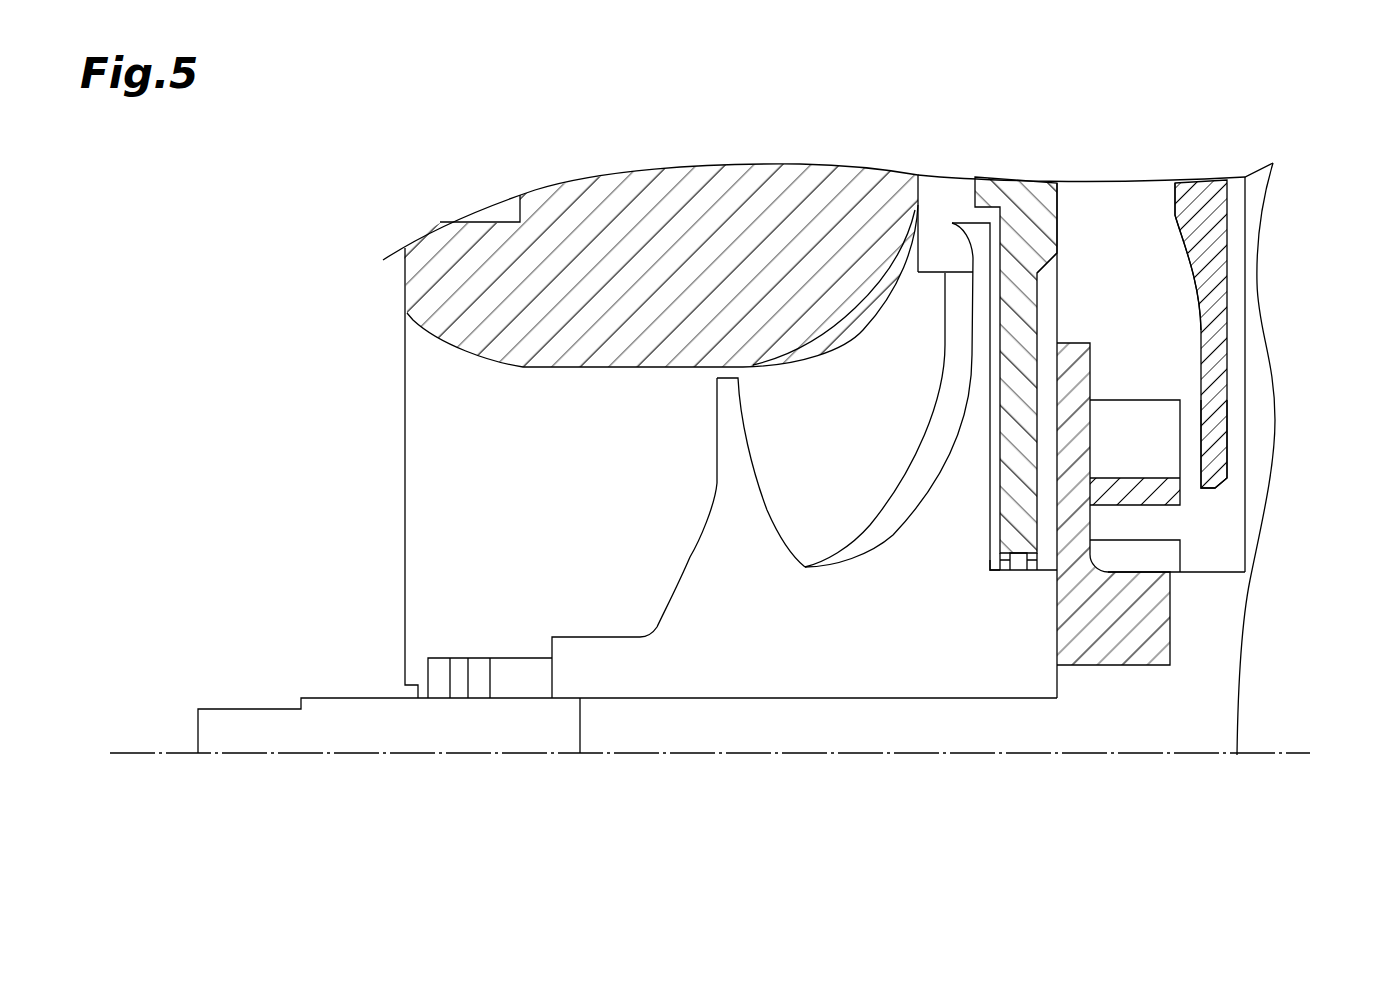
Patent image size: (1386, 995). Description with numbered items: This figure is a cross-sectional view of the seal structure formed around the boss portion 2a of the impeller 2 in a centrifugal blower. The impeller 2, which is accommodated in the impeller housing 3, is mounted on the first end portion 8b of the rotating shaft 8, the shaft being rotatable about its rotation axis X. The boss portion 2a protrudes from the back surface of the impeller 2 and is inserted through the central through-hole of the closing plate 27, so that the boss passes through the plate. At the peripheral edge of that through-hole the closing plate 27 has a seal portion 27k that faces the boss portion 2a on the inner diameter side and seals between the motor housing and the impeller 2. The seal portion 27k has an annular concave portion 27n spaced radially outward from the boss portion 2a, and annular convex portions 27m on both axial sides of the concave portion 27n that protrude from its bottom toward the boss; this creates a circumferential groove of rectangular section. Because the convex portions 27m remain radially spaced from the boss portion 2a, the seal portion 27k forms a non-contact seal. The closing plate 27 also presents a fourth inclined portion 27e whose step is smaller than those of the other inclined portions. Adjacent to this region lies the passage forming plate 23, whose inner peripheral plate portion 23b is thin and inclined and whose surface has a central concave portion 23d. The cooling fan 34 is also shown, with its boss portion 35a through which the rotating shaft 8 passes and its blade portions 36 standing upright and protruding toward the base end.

The impeller 2 is at (677, 562).
The boss portion 2a is at (1046, 606).
The impeller housing 3 is at (397, 294).
The rotating shaft 8 is at (622, 689).
The first end portion 8b is at (767, 738).
The passage forming plate 23 is at (1239, 312).
The inner peripheral plate portion 23b is at (1226, 392).
The concave portion 23d is at (1201, 330).
The closing plate 27 is at (1017, 170).
The fourth inclined portion 27e is at (1057, 272).
The seal portion 27k is at (980, 564).
The convex portion 27m is at (1005, 572).
The concave portion 27n is at (1018, 572).
The cooling fan 34 is at (1184, 640).
The boss portion 35a is at (1165, 589).
The blade portions 36 is at (1133, 400).
The rotation axis X is at (440, 756).